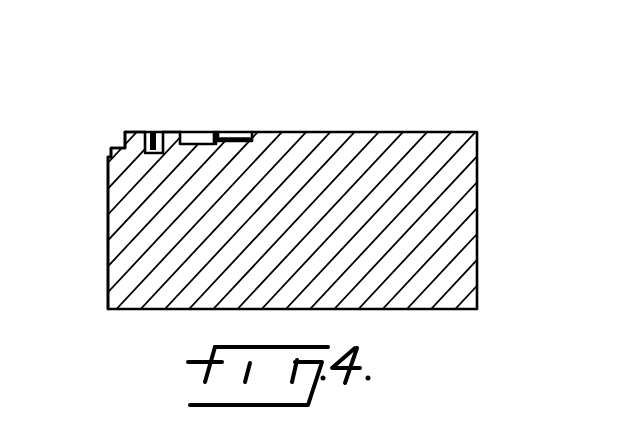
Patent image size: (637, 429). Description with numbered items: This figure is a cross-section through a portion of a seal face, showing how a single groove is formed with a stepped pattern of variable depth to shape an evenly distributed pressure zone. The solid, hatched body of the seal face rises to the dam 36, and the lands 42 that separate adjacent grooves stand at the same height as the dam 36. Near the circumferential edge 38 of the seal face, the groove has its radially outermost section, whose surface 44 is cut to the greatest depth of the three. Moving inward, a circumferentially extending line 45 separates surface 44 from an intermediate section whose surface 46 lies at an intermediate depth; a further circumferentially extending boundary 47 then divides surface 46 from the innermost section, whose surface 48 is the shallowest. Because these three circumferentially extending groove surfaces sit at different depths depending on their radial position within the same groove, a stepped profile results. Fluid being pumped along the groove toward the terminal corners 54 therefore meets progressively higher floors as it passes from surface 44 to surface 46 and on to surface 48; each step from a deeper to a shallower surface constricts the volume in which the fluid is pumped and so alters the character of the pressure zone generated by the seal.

The dam 36 is at (413, 132).
The circumferential edge 38 is at (108, 240).
The lands 42 is at (136, 131).
The surface 44 is at (118, 152).
The circumferentially extending line 45 is at (124, 140).
The surface 46 is at (204, 131).
The circumferentially extending boundary 47 is at (214, 131).
The surface 48 is at (242, 131).
The terminal corners 54 is at (157, 130).